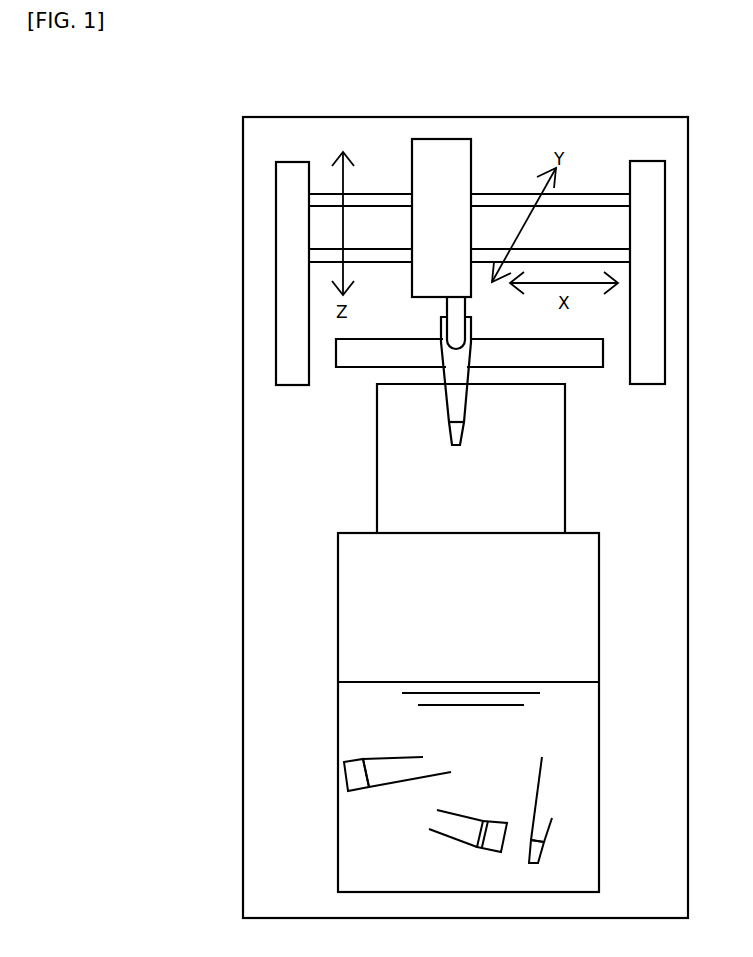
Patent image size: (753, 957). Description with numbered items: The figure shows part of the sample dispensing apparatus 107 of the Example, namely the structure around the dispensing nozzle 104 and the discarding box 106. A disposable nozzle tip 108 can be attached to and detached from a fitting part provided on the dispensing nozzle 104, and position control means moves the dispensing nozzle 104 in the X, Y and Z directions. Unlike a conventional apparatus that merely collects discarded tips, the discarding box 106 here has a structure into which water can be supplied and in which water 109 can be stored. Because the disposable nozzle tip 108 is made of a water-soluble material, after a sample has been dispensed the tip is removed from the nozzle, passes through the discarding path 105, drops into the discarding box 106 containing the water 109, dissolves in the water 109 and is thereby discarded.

The sample dispensing apparatus 107 is at (287, 118).
The dispensing nozzle 104 is at (439, 147).
The disposable nozzle tip 108 is at (452, 400).
The discarding path 105 is at (392, 498).
The discarding box 106 is at (583, 596).
The water 109 is at (583, 736).